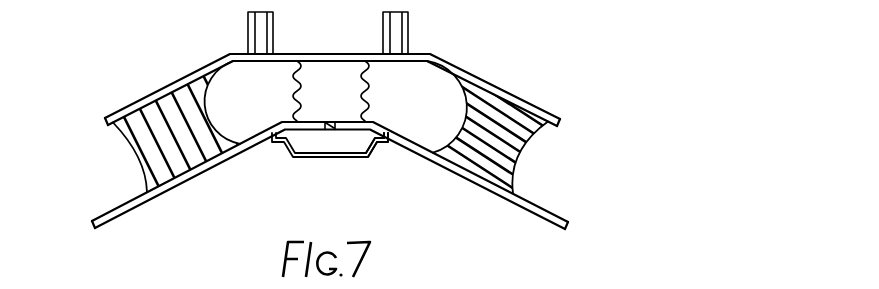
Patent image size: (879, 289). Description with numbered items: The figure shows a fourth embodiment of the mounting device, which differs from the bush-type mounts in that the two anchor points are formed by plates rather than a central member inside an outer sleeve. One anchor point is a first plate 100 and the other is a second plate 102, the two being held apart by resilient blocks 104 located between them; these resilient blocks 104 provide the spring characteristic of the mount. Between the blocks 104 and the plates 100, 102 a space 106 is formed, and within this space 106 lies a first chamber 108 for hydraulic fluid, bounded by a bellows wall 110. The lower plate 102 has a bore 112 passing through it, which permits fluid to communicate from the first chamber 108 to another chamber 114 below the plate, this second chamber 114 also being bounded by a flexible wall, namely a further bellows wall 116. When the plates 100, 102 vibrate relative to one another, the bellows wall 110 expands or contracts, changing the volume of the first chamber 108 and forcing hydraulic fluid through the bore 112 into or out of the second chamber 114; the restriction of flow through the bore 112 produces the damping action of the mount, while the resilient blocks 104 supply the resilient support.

The first plate 100 is at (527, 105).
The plate 102 is at (560, 223).
The resilient blocks 104 is at (152, 133).
The space 106 is at (378, 78).
The first chamber 108 is at (332, 80).
The bellows wall 110 is at (290, 88).
The bore 112 is at (333, 125).
The chamber 114 is at (337, 143).
The bellows wall 116 is at (374, 147).